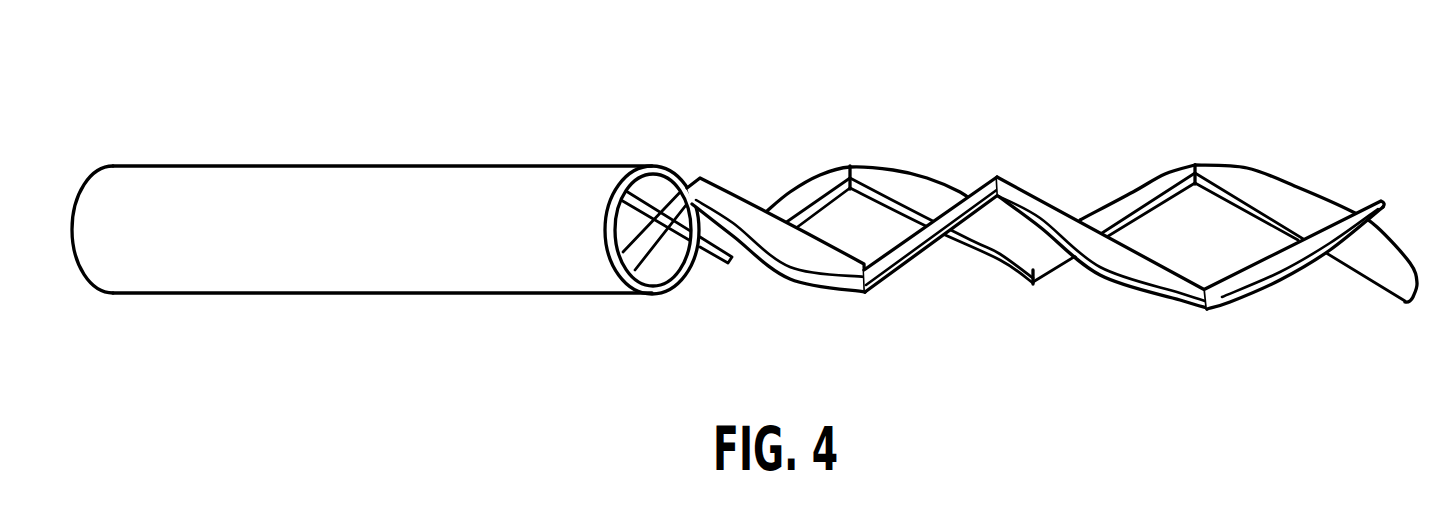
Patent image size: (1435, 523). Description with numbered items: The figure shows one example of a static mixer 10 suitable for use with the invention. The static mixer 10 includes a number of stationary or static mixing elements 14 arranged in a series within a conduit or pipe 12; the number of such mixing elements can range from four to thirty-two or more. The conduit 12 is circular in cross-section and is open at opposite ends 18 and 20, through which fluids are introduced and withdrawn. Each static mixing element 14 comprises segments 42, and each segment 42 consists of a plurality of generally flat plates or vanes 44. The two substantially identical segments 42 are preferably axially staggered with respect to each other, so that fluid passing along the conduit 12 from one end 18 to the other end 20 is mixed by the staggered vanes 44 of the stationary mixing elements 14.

The static mixer 10 is at (733, 194).
The conduit 12 is at (399, 242).
The static mixing element 14 is at (1019, 205).
The end 18 is at (81, 203).
The end 20 is at (677, 243).
The segment 42 is at (842, 266).
The vane 44 is at (1190, 266).